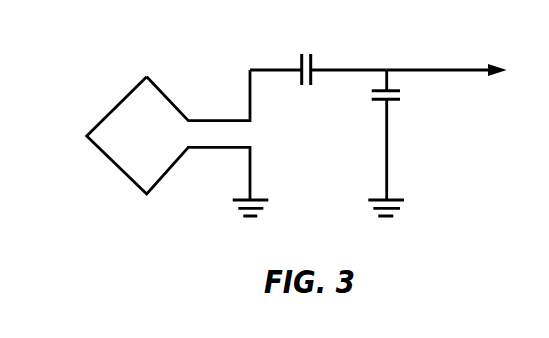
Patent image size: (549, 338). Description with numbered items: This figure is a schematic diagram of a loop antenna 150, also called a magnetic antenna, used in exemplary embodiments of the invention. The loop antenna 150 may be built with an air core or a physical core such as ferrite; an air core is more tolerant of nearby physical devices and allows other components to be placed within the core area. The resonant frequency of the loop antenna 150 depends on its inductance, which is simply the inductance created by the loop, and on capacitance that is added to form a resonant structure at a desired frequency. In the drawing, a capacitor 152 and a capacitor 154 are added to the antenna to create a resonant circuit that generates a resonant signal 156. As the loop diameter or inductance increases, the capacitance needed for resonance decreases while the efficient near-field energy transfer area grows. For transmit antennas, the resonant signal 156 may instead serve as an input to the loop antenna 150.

The loop antenna 150 is at (117, 105).
The capacitor 152 is at (312, 58).
The capacitor 154 is at (397, 104).
The resonant signal 156 is at (423, 68).